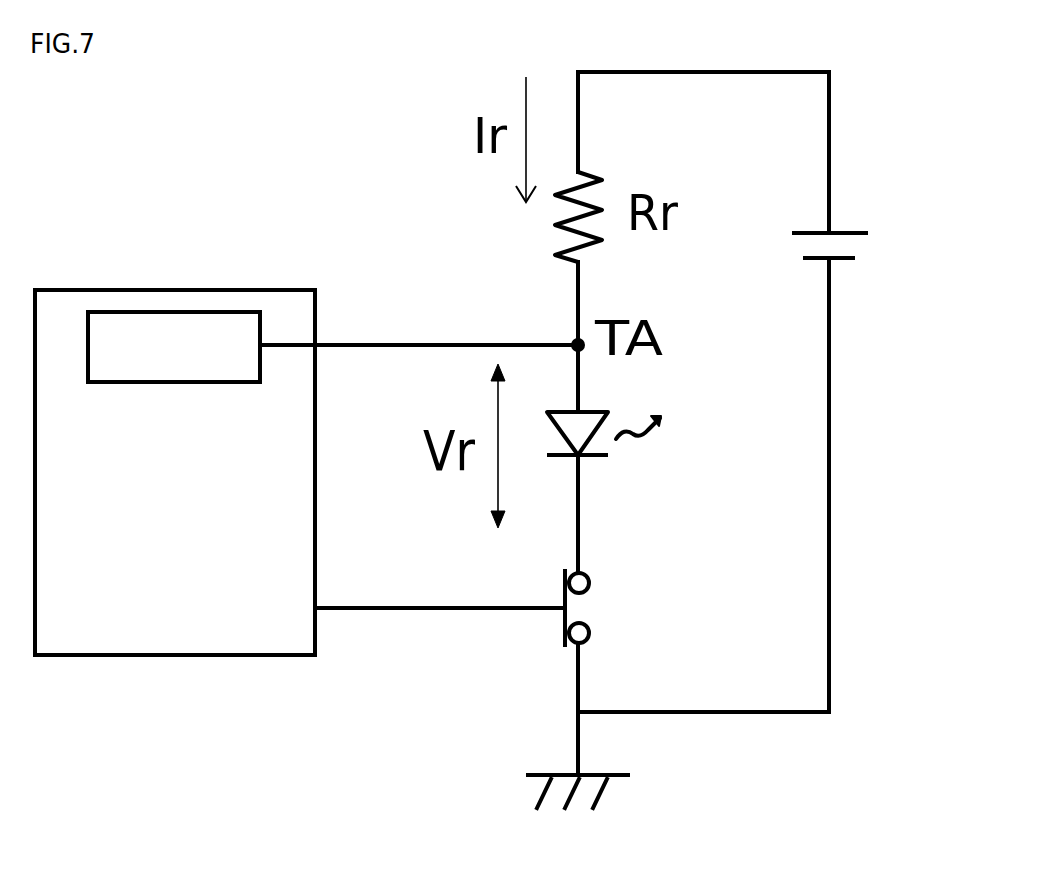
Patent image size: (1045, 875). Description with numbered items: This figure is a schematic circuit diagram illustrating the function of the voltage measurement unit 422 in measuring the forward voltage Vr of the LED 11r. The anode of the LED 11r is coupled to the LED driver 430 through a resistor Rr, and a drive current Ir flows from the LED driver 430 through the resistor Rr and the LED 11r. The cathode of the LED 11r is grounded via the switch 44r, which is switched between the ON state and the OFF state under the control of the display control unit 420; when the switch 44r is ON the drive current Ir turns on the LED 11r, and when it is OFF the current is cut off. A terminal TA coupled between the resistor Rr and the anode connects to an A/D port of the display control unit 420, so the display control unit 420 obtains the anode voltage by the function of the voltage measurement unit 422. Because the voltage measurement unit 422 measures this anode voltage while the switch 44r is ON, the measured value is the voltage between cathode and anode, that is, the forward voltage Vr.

The LED driver 430 is at (840, 227).
The display control unit 420 is at (300, 472).
The voltage measurement unit 422 is at (333, 347).
The LED 11r is at (587, 457).
The switch 44r is at (613, 610).